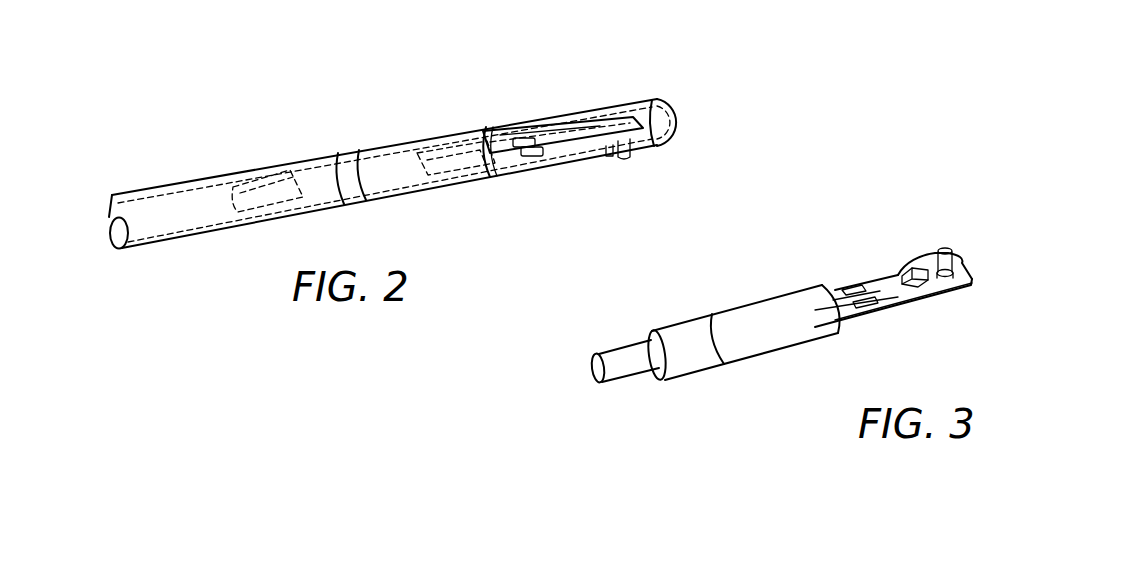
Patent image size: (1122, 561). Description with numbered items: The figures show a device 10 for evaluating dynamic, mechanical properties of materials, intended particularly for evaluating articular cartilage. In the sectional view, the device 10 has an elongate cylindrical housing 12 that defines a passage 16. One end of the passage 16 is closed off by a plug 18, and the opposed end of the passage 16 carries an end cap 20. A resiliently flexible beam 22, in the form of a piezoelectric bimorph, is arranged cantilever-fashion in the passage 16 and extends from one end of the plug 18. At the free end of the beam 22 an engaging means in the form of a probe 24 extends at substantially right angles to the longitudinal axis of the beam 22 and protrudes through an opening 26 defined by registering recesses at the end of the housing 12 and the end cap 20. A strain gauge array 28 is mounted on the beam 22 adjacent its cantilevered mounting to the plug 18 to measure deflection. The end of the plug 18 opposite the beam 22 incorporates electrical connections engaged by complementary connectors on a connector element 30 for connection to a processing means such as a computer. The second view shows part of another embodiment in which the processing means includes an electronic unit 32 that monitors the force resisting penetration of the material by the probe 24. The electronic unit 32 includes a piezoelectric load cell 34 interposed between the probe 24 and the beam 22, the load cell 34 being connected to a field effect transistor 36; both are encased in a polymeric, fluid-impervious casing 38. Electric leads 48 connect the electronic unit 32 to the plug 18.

In FIG. 2, the device 10 is at (203, 156).
In FIG. 2, the elongate cylindrical housing 12 is at (582, 108).
In FIG. 2, the passage 16 is at (512, 165).
In FIG. 2, the plug 18 is at (397, 160).
In FIG. 2, the end cap 20 is at (680, 118).
In FIG. 2, the resiliently flexible beam 22 is at (570, 140).
In FIG. 3, the resiliently flexible beam 22 is at (897, 307).
In FIG. 2, the probe 24 is at (627, 158).
In FIG. 3, the probe 24 is at (945, 250).
In FIG. 2, the opening 26 is at (608, 153).
In FIG. 2, the strain gauge array 28 is at (530, 136).
In FIG. 3, the strain gauge array 28 is at (867, 313).
In FIG. 2, the connector element 30 is at (347, 163).
In FIG. 3, the electronic unit 32 is at (982, 264).
In FIG. 3, the piezoelectric load cell 34 is at (944, 277).
In FIG. 3, the field effect transistor 36 is at (918, 270).
In FIG. 3, the casing 38 is at (923, 260).
In FIG. 3, the electric leads 48 is at (890, 277).